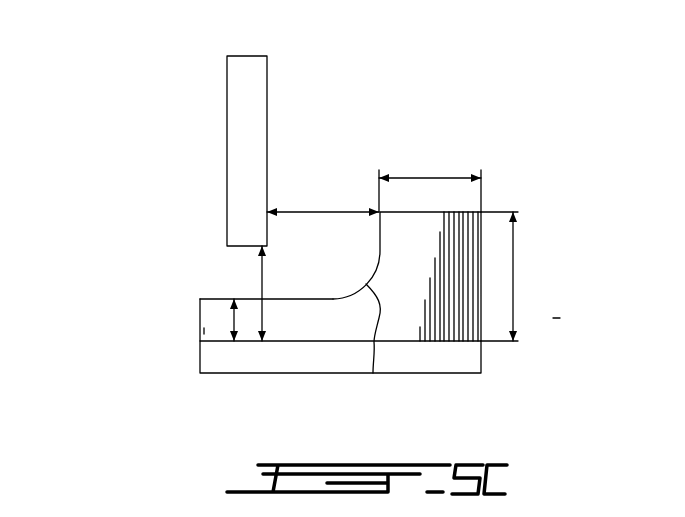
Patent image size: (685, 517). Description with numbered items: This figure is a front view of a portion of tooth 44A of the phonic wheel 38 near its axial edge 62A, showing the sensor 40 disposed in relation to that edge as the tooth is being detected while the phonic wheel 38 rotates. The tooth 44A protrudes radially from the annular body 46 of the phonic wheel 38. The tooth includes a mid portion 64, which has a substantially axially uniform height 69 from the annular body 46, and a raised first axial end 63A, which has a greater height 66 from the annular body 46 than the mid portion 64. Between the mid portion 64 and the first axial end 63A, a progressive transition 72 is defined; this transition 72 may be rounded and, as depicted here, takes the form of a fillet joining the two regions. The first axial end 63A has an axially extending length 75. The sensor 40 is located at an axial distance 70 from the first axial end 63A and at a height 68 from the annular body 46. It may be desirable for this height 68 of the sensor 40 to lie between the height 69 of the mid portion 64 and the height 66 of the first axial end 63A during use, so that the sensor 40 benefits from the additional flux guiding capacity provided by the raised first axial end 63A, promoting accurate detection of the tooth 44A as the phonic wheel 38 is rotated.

The phonic wheel 38 is at (553, 318).
The sensor 40 is at (227, 112).
The tooth 44A is at (204, 328).
The annular body 46 is at (315, 357).
The axial edge 62A is at (481, 240).
The first axial end 63A is at (407, 227).
The mid portion 64 is at (214, 299).
The height 66 is at (513, 278).
The height 68 is at (262, 282).
The height 69 is at (234, 318).
The axial distance 70 is at (325, 212).
The progressive transition 72 is at (375, 373).
The axially extending length 75 is at (444, 178).